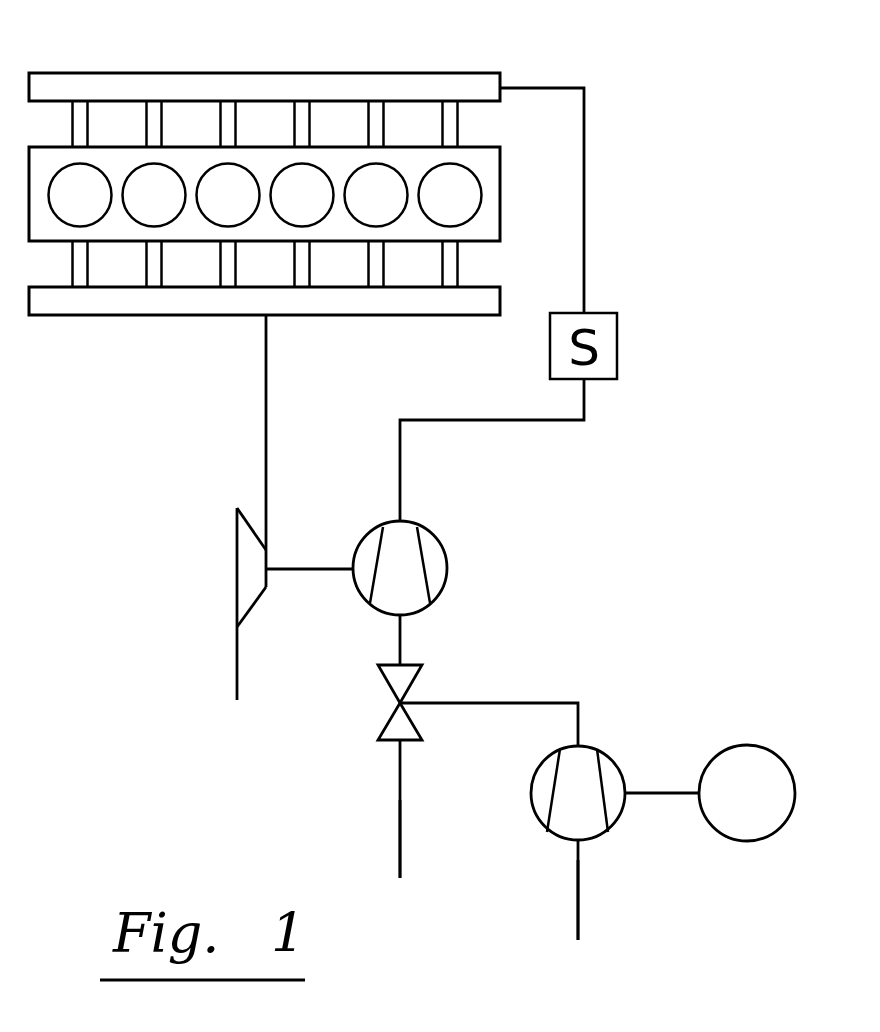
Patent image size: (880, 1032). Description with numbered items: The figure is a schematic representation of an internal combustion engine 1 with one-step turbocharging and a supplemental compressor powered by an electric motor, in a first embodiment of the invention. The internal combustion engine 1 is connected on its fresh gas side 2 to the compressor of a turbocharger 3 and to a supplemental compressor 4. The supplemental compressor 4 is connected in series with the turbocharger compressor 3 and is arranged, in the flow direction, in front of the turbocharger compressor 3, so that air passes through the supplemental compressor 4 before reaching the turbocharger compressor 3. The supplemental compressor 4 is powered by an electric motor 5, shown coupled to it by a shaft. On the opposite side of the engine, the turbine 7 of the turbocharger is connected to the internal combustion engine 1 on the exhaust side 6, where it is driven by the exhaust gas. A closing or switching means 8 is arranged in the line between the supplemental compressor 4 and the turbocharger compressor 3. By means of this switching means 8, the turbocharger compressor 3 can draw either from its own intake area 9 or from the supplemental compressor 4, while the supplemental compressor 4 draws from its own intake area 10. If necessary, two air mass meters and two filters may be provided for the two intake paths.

The internal combustion engine 1 is at (492, 183).
The fresh gas side 2 is at (468, 74).
The turbocharger compressor 3 is at (408, 560).
The supplemental compressor 4 is at (585, 783).
The electric motor 5 is at (763, 763).
The exhaust side 6 is at (217, 312).
The turbine 7 is at (243, 572).
The switching means 8 is at (400, 703).
The intake area 9 is at (400, 836).
The intake area 10 is at (578, 912).